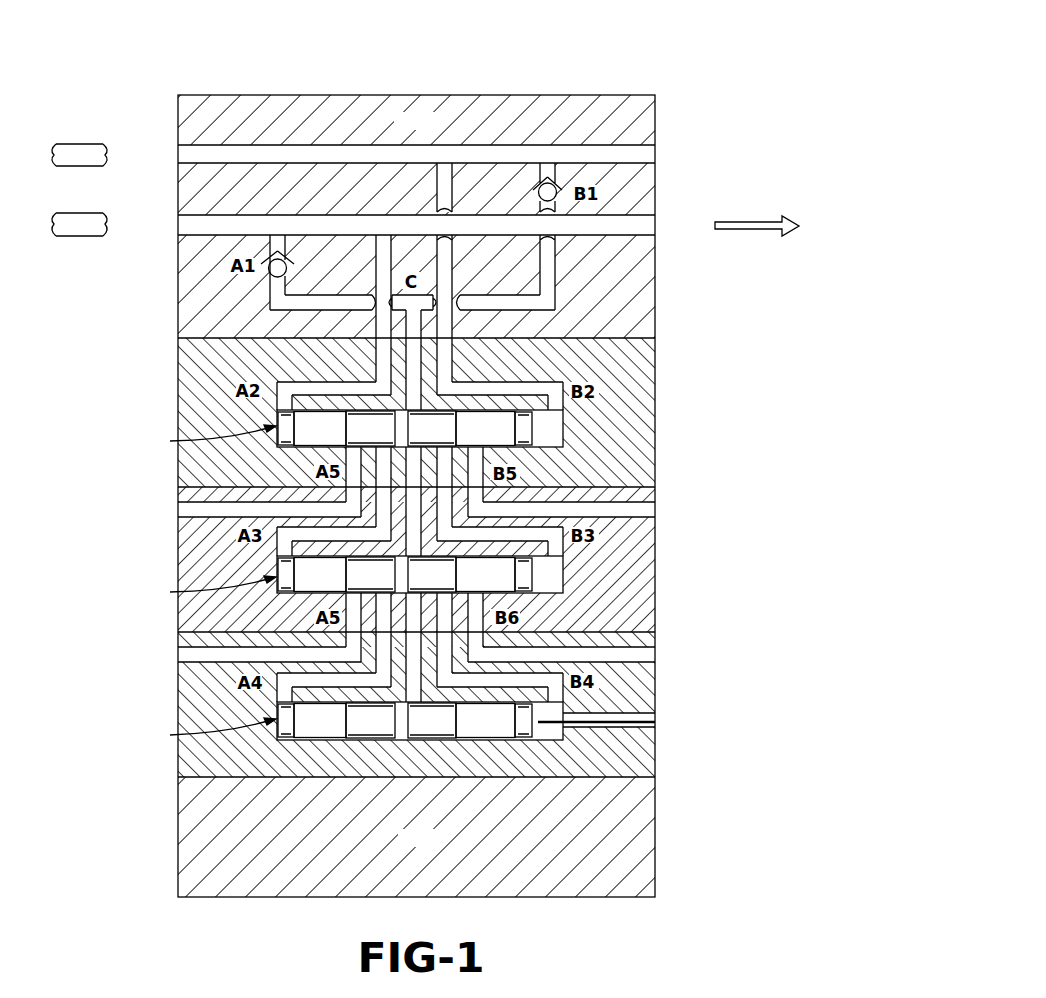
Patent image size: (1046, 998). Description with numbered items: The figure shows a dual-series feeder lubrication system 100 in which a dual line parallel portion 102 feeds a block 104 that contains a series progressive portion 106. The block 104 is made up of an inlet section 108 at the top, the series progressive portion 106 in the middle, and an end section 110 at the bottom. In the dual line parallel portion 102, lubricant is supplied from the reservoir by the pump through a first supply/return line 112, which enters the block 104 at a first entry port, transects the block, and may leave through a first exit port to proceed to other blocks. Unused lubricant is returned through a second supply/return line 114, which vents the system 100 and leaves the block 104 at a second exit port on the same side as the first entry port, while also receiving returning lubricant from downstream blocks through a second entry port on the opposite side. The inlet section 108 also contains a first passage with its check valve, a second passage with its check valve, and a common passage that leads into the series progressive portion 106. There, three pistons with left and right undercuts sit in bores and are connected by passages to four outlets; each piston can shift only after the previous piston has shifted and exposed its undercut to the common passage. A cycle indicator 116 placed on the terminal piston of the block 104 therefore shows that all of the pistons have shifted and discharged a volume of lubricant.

The dual-series feeder lubrication system 100 is at (702, 88).
The dual line parallel portion 102 is at (40, 124).
The block 104 is at (727, 103).
The series progressive portion 106 is at (106, 778).
The inlet section 108 is at (416, 120).
The end section 110 is at (416, 837).
The first supply/return line 112 is at (353, 225).
The second supply/return line 114 is at (353, 155).
The cycle indicator 116 is at (640, 714).